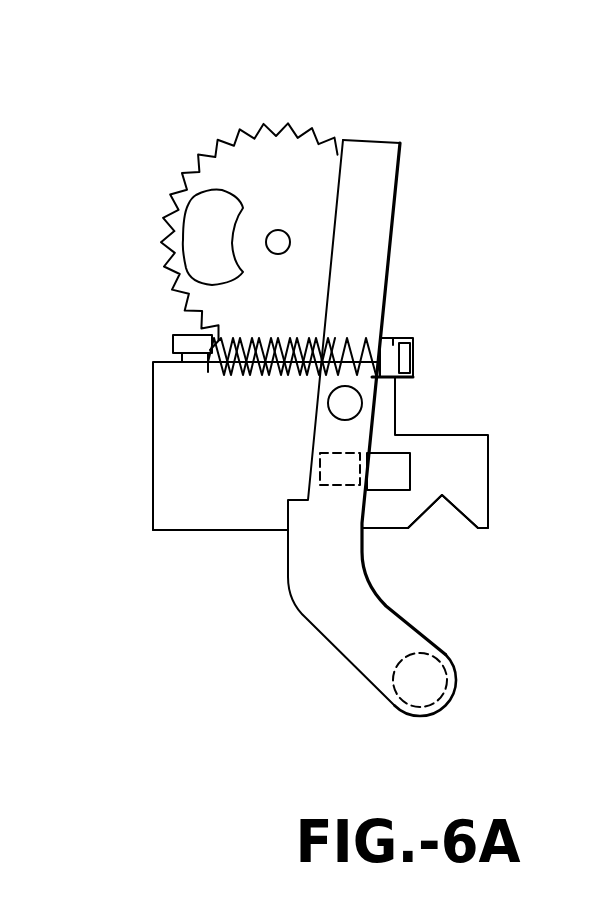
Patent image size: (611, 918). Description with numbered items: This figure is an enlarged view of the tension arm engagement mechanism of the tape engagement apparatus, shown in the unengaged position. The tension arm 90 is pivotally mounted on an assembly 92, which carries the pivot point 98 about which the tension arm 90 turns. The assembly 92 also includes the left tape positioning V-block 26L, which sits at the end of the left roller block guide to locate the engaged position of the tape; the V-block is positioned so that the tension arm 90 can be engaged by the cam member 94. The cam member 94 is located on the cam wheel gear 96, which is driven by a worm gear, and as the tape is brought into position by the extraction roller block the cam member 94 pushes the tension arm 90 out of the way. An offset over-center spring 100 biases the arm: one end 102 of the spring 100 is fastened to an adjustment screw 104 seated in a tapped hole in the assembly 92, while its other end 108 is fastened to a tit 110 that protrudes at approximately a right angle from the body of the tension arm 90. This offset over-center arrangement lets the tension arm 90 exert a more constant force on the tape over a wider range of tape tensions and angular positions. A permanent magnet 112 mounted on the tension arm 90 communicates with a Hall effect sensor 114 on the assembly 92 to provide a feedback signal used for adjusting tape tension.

The tension arm 90 is at (397, 196).
The assembly 92 is at (153, 475).
The cam member 94 is at (210, 226).
The cam wheel gear 96 is at (257, 122).
The pivot point 98 is at (347, 403).
The offset over-center spring 100 is at (271, 374).
The end of spring 102 is at (208, 365).
The adjustment screw 104 is at (173, 342).
The other end of spring 108 is at (413, 360).
The tit 110 is at (393, 340).
The permanent magnet 112 is at (336, 486).
The Hall effect sensor 114 is at (410, 470).
The left tape positioning V-block 26L is at (428, 516).